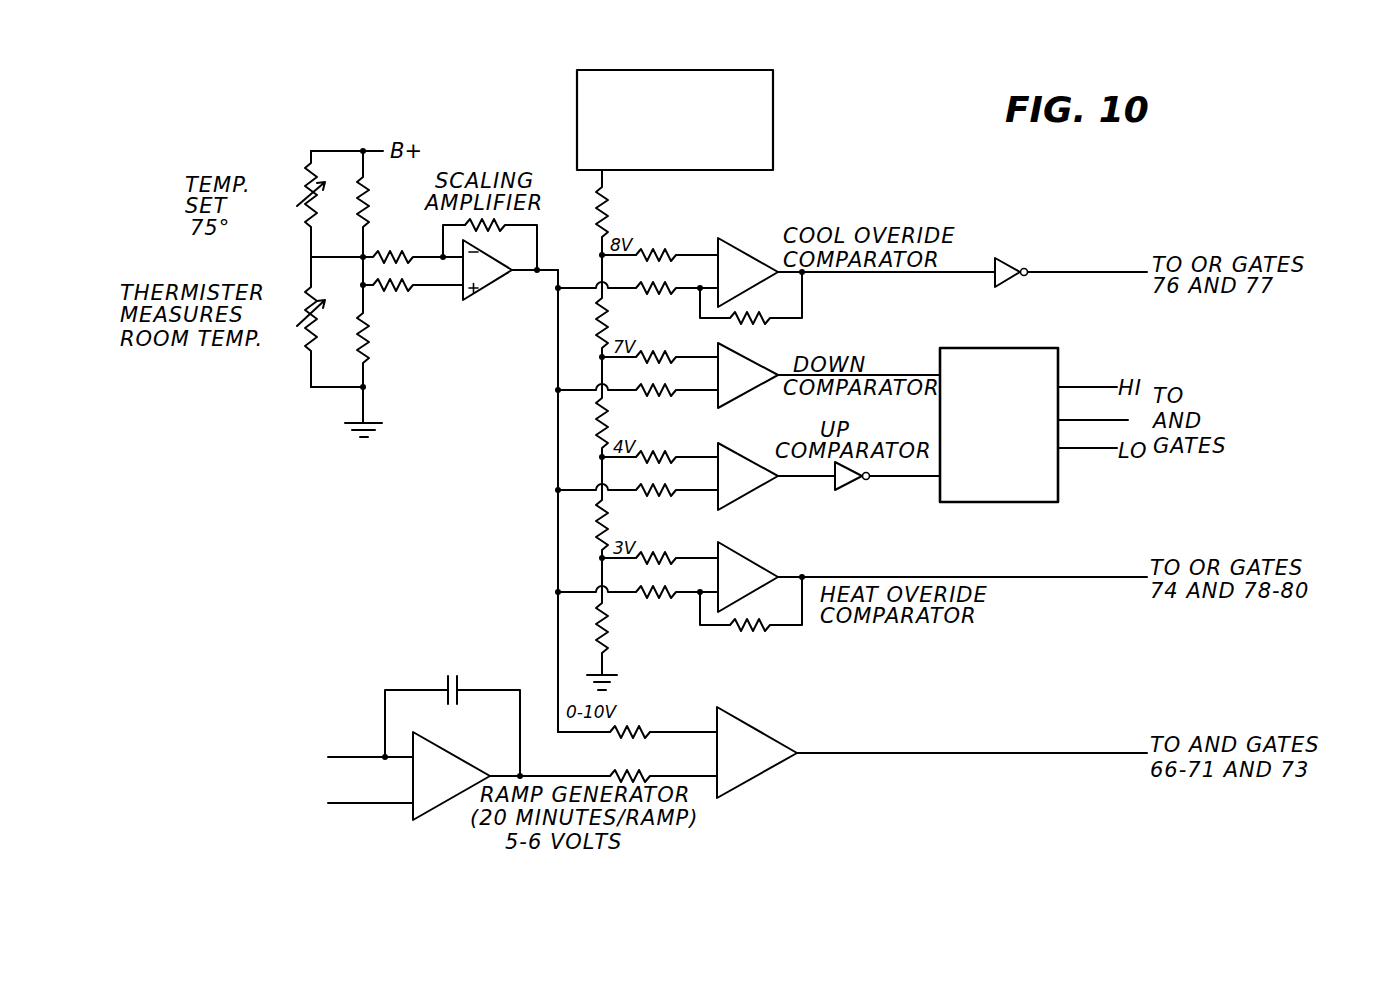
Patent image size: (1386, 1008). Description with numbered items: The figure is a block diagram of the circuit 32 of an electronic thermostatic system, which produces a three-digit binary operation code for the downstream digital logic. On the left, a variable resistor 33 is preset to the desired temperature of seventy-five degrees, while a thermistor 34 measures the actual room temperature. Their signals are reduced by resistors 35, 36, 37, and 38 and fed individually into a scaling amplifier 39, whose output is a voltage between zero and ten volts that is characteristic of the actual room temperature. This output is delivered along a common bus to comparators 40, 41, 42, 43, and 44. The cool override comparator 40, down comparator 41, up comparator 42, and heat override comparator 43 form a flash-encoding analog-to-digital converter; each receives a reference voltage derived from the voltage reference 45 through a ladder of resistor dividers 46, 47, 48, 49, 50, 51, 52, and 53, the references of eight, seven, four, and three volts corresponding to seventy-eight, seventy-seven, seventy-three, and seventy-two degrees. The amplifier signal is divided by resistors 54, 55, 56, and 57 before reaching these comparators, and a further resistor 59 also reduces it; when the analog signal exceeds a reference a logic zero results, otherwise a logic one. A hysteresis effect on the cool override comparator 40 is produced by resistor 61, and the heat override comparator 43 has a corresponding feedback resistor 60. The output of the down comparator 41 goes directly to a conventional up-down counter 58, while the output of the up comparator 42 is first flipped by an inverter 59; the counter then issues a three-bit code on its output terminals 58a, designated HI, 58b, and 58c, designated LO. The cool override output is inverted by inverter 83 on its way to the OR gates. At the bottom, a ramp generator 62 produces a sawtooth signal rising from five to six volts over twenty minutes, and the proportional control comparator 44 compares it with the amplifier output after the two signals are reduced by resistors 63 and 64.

The circuit 32 is at (491, 469).
The variable resistor 33 is at (306, 189).
The thermistor 34 is at (305, 330).
The resistor 35 is at (371, 200).
The resistor 36 is at (372, 344).
The resistor 37 is at (401, 252).
The resistor 38 is at (400, 290).
The scaling amplifier 39 is at (486, 293).
The cool override comparator 40 is at (770, 232).
The down comparator 41 is at (748, 368).
The up comparator 42 is at (770, 437).
The heat override comparator 43 is at (745, 560).
The proportional control comparator 44 is at (757, 733).
The voltage reference 45 is at (776, 120).
The resistor divider 46 is at (608, 210).
The resistor divider 47 is at (653, 247).
The resistor divider 48 is at (606, 306).
The resistor divider 49 is at (657, 355).
The resistor divider 50 is at (620, 428).
The resistor divider 51 is at (660, 452).
The resistor divider 52 is at (608, 532).
The resistor divider 53 is at (653, 552).
The resistor 54 is at (647, 293).
The resistor 55 is at (660, 388).
The resistor 56 is at (660, 492).
The resistor 57 is at (640, 600).
The up-down counter 58 is at (992, 348).
The output terminal 58a is at (1085, 387).
The output terminal 58b is at (1120, 420).
The output terminal 58c is at (1080, 450).
The inverter 59 is at (607, 633).
The feedback resistor 60 is at (742, 630).
The resistor 61 is at (755, 318).
The ramp generator 62 is at (448, 752).
The resistor 63 is at (650, 730).
The resistor 64 is at (642, 770).
The inverter 83 is at (1012, 260).